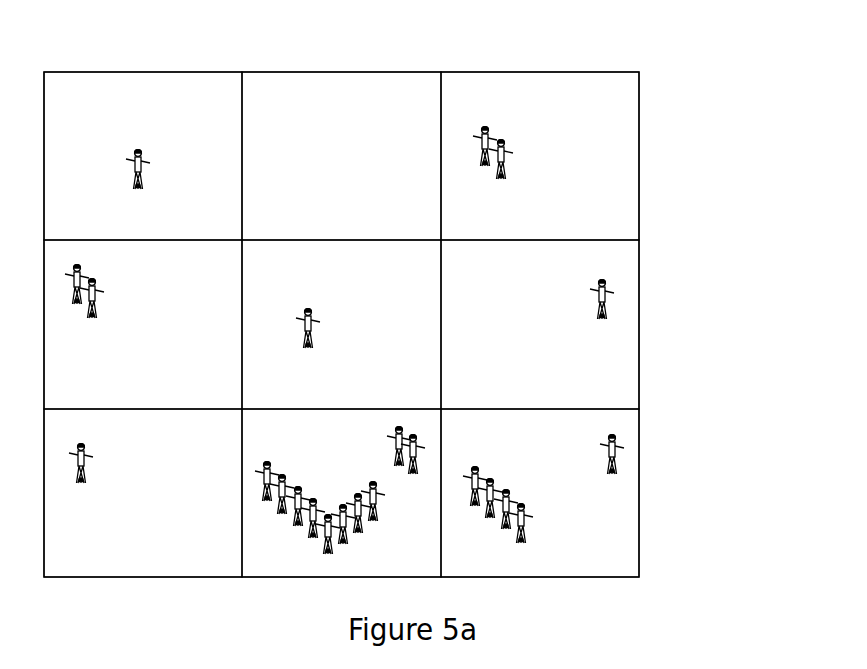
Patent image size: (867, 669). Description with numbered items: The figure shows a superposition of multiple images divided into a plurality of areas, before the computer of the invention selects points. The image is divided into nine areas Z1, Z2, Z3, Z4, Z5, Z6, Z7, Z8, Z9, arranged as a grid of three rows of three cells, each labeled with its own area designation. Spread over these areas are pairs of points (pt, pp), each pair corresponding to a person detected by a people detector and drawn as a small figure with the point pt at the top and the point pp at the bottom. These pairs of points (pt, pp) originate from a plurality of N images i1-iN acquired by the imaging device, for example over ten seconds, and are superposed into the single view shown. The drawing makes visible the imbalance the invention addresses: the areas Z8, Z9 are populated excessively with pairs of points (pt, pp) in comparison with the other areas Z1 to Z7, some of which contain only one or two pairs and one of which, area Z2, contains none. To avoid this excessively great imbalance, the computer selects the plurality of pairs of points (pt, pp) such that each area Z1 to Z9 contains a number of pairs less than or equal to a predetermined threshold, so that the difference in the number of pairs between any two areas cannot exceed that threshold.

The area Z1 is at (124, 103).
The area Z2 is at (324, 103).
The area Z3 is at (529, 103).
The area Z4 is at (157, 273).
The area Z5 is at (344, 273).
The area Z6 is at (529, 275).
The area Z7 is at (125, 444).
The area Z8 is at (329, 444).
The area Z9 is at (455, 444).
The point pt is at (344, 325).
The point pp is at (344, 357).
The images i1-iN is at (686, 121).